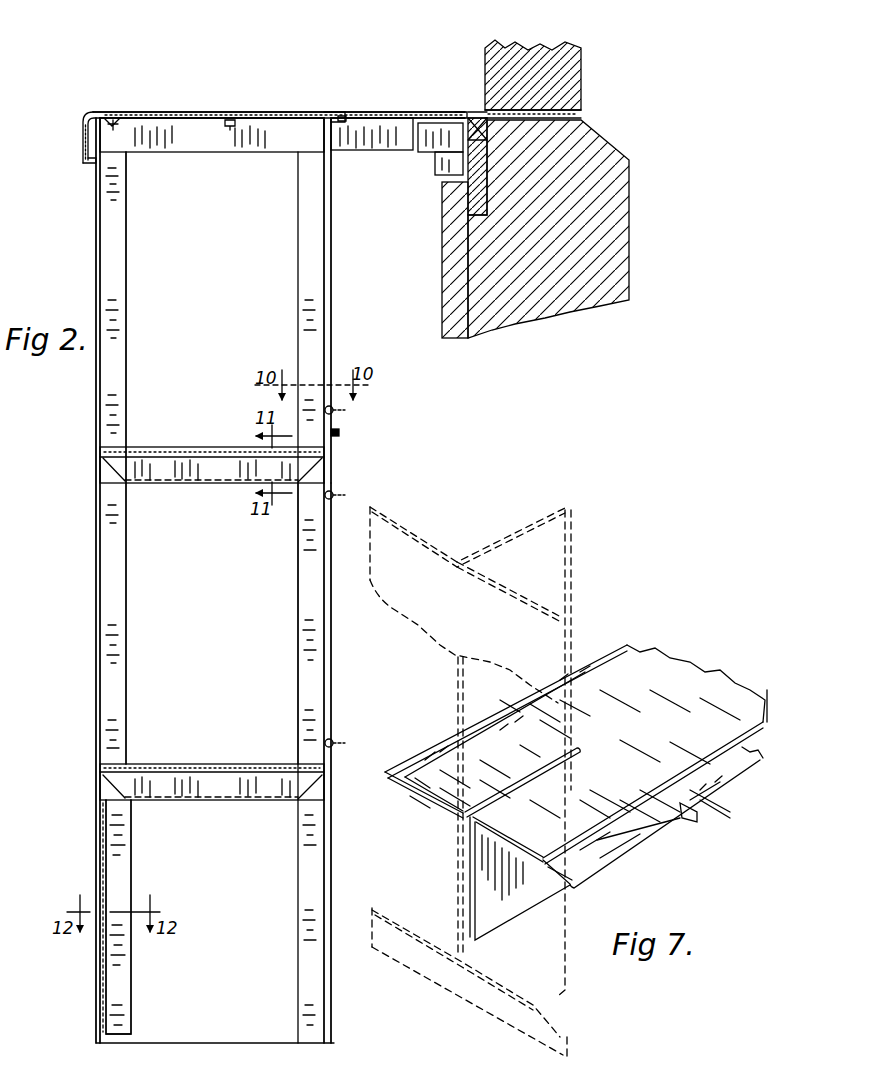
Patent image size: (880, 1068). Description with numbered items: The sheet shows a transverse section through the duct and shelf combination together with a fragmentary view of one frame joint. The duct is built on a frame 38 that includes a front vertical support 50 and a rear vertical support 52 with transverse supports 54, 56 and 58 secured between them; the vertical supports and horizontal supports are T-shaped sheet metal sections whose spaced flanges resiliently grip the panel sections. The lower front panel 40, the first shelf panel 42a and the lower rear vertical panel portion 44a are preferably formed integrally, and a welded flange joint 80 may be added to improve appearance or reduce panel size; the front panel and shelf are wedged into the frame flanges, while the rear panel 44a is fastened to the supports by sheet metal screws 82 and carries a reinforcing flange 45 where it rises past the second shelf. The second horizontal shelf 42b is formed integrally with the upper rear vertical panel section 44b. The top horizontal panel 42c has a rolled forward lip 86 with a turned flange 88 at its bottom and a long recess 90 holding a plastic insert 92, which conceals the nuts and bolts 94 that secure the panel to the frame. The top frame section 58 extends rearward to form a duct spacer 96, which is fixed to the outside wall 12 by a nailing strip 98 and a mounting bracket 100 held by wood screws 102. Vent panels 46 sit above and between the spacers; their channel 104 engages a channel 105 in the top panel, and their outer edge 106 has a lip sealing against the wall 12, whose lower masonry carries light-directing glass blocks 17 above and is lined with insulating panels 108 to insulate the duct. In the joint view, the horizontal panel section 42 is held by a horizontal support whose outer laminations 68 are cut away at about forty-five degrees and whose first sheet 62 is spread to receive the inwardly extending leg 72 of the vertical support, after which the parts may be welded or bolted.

In FIG. 2, the outside wall 12 is at (588, 170).
In FIG. 2, the light-directing glass blocks 17 is at (572, 70).
In FIG. 2, the frame 38 is at (110, 236).
In FIG. 2, the lower front panel 40 is at (102, 970).
In FIG. 7, the horizontal panel section 42 is at (640, 686).
In FIG. 2, the first shelf panel 42a is at (232, 772).
In FIG. 2, the second horizontal shelf 42b is at (200, 450).
In FIG. 2, the top horizontal panel 42c is at (250, 116).
In FIG. 2, the lower rear vertical panel portion 44a is at (334, 642).
In FIG. 2, the upper rear vertical panel section 44b is at (333, 290).
In FIG. 2, the reinforcing flange 45 is at (339, 434).
In FIG. 2, the vent panels 46 is at (368, 110).
In FIG. 2, the front vertical support 50 is at (110, 613).
In FIG. 2, the rear vertical support 52 is at (330, 542).
In FIG. 2, the transverse support 54 is at (160, 783).
In FIG. 2, the horizontal shelf support 56 is at (152, 466).
In FIG. 2, the top horizontal frame section 58 is at (163, 135).
In FIG. 7, the first sheet 62 is at (505, 898).
In FIG. 7, the outer laminations 68 is at (598, 862).
In FIG. 7, the inwardly extending leg 72 is at (548, 572).
In FIG. 2, the welded flange joint 80 is at (98, 467).
In FIG. 2, the sheet metal screws 82 is at (340, 413).
In FIG. 2, the rolled forward lip 86 is at (82, 140).
In FIG. 2, the turned flange 88 is at (88, 164).
In FIG. 2, the recess 90 is at (110, 114).
In FIG. 2, the plastic insert 92 is at (130, 114).
In FIG. 2, the nuts and bolts 94 is at (229, 117).
In FIG. 2, the duct spacer 96 is at (385, 128).
In FIG. 2, the nailing strip 98 is at (485, 192).
In FIG. 2, the mounting bracket 100 is at (445, 165).
In FIG. 2, the wood screws 102 is at (466, 114).
In FIG. 2, the channel 104 is at (335, 112).
In FIG. 2, the channel 105 is at (350, 112).
In FIG. 2, the outer edge 106 is at (462, 114).
In FIG. 2, the insulating panels 108 is at (455, 328).